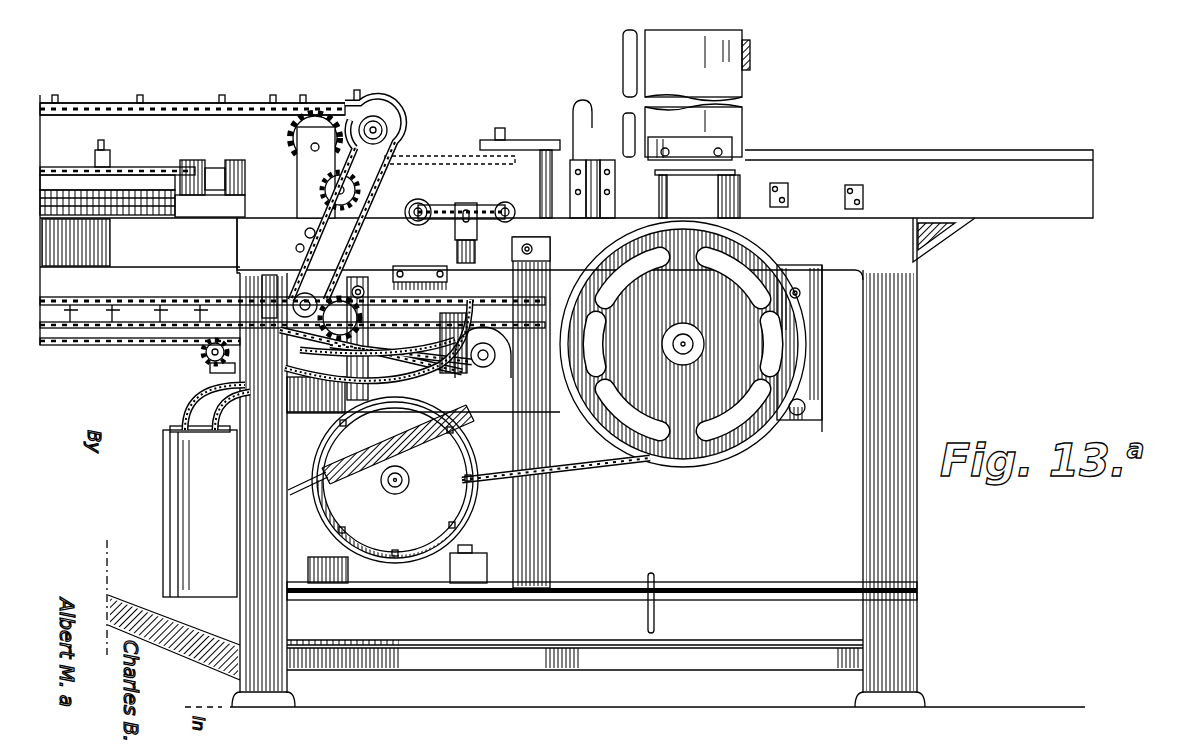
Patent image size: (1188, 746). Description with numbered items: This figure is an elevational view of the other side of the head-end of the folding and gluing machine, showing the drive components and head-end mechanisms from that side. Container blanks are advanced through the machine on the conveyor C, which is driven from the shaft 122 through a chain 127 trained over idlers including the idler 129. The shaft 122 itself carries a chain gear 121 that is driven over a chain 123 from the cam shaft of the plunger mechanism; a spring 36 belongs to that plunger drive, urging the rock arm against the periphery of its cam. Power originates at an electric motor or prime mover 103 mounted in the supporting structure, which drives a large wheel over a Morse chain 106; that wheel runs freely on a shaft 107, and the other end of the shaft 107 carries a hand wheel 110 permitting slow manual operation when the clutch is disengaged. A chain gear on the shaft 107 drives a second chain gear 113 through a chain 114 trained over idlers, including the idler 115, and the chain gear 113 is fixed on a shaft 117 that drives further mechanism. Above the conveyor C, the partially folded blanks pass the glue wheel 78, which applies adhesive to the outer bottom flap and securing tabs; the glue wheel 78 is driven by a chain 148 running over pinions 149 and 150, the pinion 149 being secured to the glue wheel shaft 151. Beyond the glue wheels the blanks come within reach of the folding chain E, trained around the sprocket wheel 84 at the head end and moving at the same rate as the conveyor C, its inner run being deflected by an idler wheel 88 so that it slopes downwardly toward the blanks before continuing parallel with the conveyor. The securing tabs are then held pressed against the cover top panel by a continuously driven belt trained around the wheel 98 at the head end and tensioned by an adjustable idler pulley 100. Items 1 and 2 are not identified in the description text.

The folding chain E is at (194, 104).
The conveyor rail 1 is at (304, 103).
The conveyor chain 2 is at (328, 106).
The sprocket wheel 84 is at (392, 124).
The wheel 98 is at (290, 134).
The adjustable idler pulley 100 is at (202, 178).
The idler wheel 88 is at (300, 156).
The glue wheel 78 is at (432, 162).
The glue wheel shaft 151 is at (408, 210).
The pinion 149 is at (412, 218).
The chain 148 is at (460, 218).
The idler 115 is at (372, 260).
The pinion 150 is at (510, 220).
The chain 114 is at (540, 276).
The shaft 117 is at (300, 302).
The conveyor C is at (104, 302).
The chain gear 113 is at (292, 332).
The idler 129 is at (206, 362).
The chain 127 is at (134, 346).
The chain 123 is at (420, 378).
The chain gear 121 is at (468, 378).
The shaft 122 is at (483, 368).
The shaft 107 is at (698, 350).
The hand wheel 110 is at (736, 455).
The Morse chain 106 is at (593, 470).
The spring 36 is at (368, 470).
The electric motor 103 is at (393, 500).